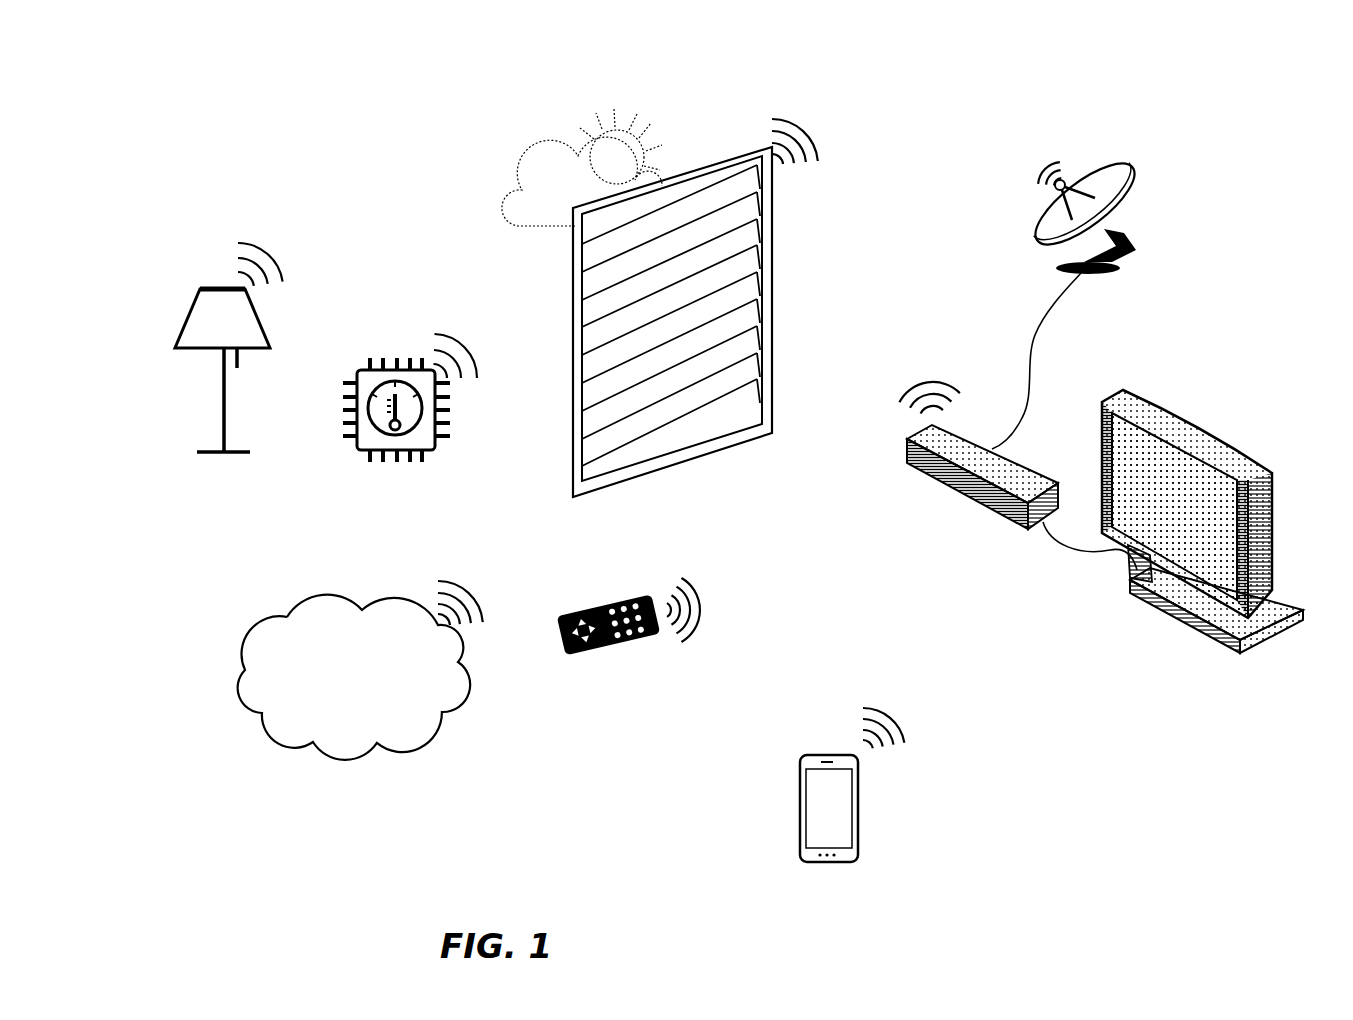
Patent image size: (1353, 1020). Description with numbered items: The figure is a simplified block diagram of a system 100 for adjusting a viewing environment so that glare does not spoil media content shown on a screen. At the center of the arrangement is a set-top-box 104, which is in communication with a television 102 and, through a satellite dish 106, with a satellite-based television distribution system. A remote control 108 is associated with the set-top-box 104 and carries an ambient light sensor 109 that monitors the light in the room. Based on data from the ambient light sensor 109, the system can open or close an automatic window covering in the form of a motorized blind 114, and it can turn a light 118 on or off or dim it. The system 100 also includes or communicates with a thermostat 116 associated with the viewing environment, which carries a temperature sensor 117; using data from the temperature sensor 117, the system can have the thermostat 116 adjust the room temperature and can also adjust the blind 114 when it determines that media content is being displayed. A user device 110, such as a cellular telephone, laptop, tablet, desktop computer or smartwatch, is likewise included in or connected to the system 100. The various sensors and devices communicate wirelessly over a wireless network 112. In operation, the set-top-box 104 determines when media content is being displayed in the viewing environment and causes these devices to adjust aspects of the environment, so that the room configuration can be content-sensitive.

The system 100 is at (273, 99).
The television 102 is at (1172, 397).
The set-top-box 104 is at (943, 487).
The satellite dish 106 is at (1133, 192).
The remote control 108 is at (645, 647).
The ambient light sensor 109 is at (637, 597).
The user device 110 is at (860, 793).
The wireless network 112 is at (430, 740).
The motorized blind 114 is at (772, 250).
The thermostat 116 is at (379, 416).
The temperature sensor 117 is at (423, 362).
The light 118 is at (222, 458).